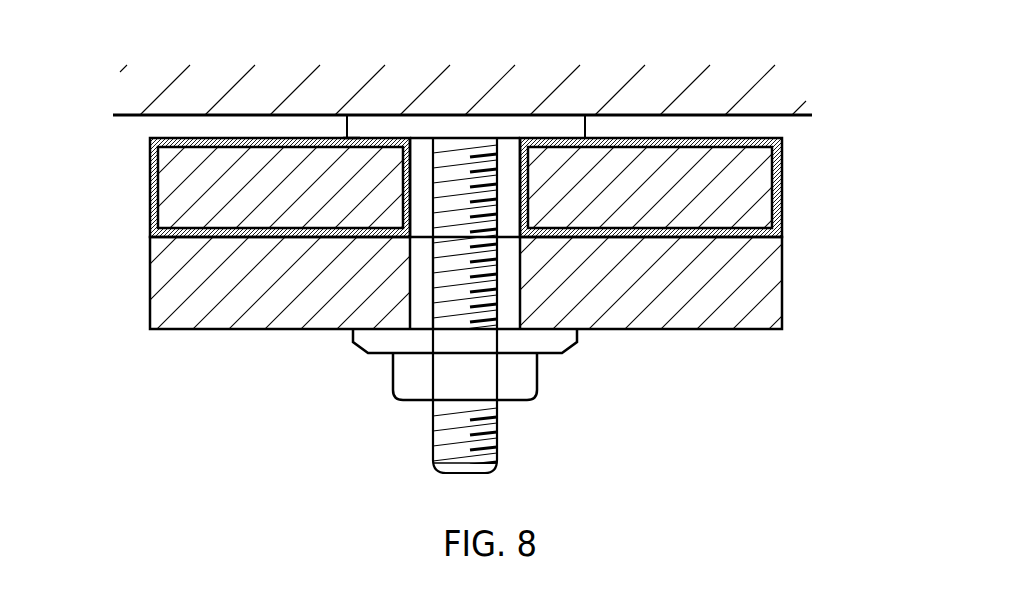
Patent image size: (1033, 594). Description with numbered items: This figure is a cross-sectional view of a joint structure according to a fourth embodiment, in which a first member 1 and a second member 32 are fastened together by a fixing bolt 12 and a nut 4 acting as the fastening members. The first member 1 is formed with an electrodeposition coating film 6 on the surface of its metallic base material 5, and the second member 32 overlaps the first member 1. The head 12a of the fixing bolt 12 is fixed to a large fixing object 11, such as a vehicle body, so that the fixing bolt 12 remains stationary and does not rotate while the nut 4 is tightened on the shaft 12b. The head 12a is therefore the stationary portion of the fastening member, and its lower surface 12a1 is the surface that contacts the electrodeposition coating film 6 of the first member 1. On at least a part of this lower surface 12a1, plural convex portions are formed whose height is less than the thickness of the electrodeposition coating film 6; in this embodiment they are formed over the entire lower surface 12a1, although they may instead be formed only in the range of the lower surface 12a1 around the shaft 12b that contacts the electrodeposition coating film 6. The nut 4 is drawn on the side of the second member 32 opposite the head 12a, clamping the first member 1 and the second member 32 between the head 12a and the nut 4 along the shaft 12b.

The first member 1 is at (818, 159).
The nut 4 is at (413, 388).
The metallic base material 5 is at (197, 180).
The electrodeposition coating film 6 is at (152, 207).
The fixing object 11 is at (763, 88).
The fixing bolt 12 is at (482, 183).
The head 12a is at (355, 127).
The lower surface 12a1 is at (357, 147).
The shaft 12b is at (433, 280).
The second member 32 is at (737, 286).